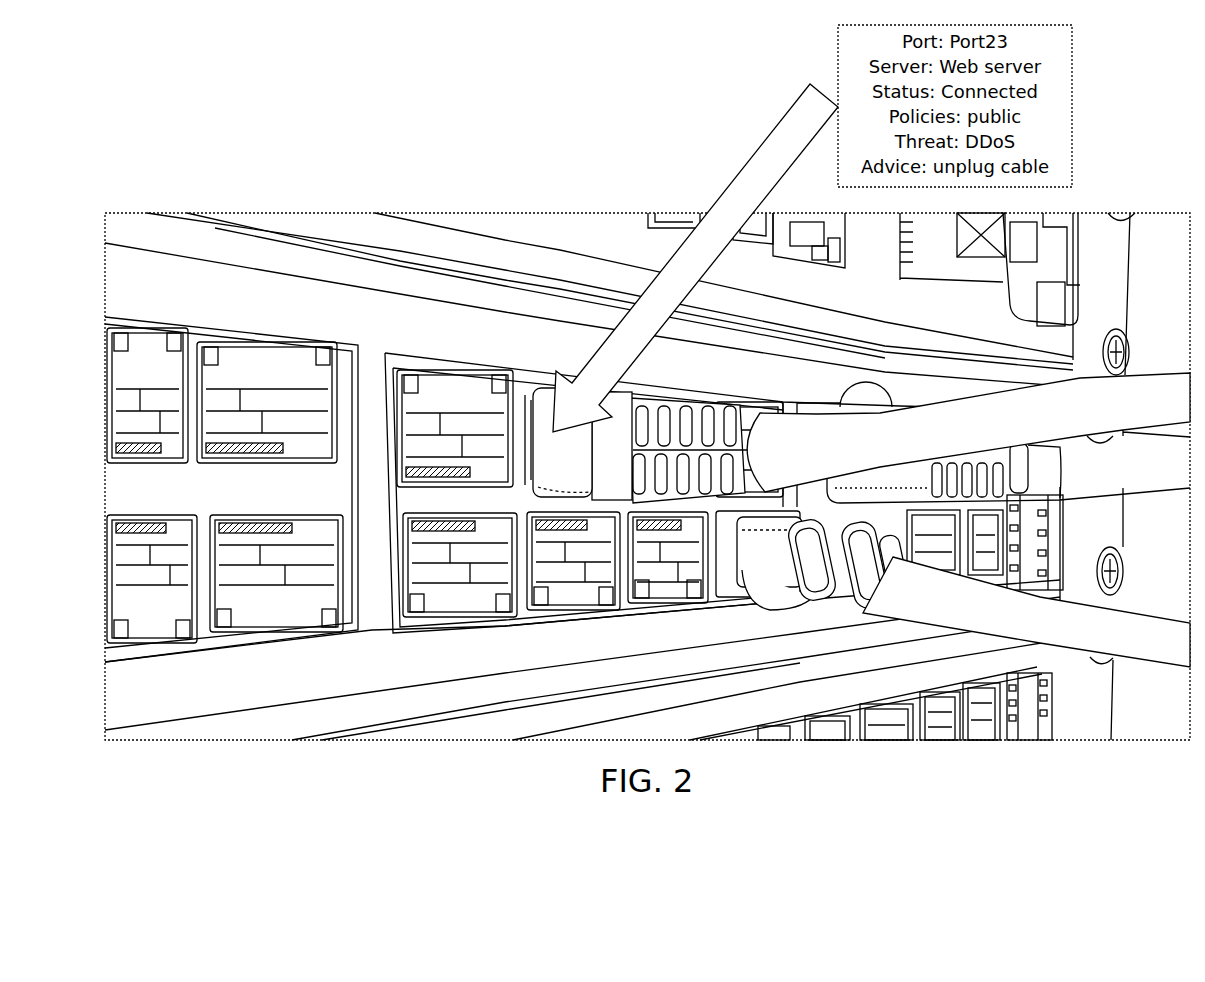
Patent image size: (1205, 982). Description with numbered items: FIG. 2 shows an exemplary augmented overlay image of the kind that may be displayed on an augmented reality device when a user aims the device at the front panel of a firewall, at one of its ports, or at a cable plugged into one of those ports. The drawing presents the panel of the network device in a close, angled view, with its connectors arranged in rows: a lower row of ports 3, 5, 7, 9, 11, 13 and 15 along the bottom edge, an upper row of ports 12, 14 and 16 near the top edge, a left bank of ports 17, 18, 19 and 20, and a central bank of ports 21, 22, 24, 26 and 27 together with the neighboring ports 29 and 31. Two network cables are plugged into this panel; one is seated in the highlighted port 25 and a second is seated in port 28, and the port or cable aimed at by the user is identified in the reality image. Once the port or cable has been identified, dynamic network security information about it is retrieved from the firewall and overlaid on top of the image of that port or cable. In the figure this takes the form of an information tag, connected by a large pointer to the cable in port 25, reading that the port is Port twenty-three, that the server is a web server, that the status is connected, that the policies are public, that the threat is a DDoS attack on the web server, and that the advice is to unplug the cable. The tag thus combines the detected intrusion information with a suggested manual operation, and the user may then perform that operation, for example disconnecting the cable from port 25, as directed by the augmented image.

The port 3 is at (663, 730).
The port 5 is at (728, 720).
The port 7 is at (778, 719).
The port 9 is at (827, 711).
The port 11 is at (886, 706).
The port 12 is at (672, 230).
The port 13 is at (940, 701).
The port 14 is at (750, 241).
The port 15 is at (981, 696).
The port 16 is at (809, 252).
The port 17 is at (147, 375).
The port 18 is at (152, 601).
The port 19 is at (267, 386).
The port 20 is at (276, 593).
The port 21 is at (455, 411).
The port 22 is at (460, 582).
The port 24 is at (573, 576).
The port with connected cable (Port23) 25 is at (861, 432).
The port 26 is at (668, 572).
The port 27 is at (749, 435).
The port with connected cable 28 is at (953, 589).
The port 29 is at (837, 444).
The port with connected cable 31 is at (1008, 448).